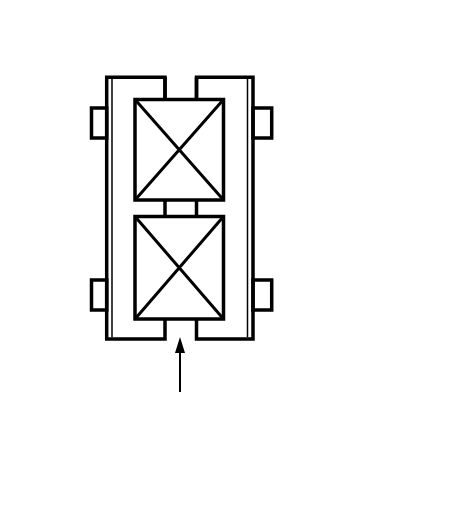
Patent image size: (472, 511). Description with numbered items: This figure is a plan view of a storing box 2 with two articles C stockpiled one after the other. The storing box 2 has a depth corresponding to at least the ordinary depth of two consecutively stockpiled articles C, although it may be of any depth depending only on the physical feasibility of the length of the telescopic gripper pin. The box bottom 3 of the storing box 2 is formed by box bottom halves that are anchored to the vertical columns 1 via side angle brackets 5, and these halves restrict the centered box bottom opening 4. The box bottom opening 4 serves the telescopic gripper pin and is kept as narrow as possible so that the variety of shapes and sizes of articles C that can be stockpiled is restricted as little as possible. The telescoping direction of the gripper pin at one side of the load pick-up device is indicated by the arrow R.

The vertical column 1 is at (272, 119).
The storing box 2 is at (217, 58).
The box bottom 3 is at (228, 87).
The box bottom opening 4 is at (176, 87).
The side angle bracket 5 is at (255, 168).
The article C is at (152, 160).
The arrow R is at (179, 375).